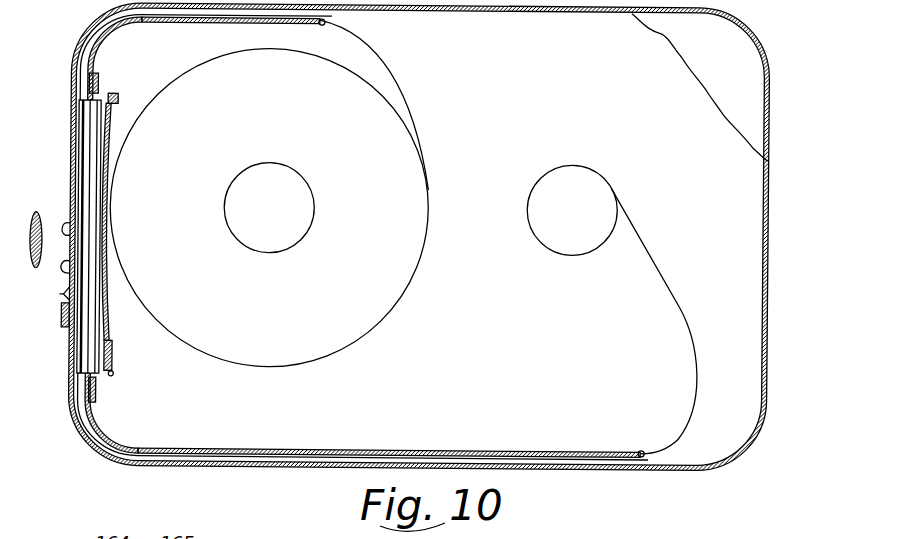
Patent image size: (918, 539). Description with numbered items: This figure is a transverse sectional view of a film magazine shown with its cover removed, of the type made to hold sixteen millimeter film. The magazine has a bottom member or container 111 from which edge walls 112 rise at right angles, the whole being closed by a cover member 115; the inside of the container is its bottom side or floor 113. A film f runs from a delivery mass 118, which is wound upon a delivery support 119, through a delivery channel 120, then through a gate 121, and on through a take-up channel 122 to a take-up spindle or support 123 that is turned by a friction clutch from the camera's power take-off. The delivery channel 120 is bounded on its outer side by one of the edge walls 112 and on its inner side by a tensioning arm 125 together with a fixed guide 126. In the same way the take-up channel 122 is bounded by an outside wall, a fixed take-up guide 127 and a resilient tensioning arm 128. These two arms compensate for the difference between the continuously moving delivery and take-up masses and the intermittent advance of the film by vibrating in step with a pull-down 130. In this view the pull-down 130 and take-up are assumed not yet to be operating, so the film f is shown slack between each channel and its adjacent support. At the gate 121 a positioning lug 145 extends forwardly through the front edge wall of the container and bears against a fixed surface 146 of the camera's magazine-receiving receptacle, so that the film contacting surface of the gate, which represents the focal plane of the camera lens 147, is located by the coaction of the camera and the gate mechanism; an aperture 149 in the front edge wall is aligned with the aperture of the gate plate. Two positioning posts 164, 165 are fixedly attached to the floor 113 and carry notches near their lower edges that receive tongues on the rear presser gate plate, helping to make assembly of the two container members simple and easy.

The bottom member or container 111 is at (752, 28).
The edge walls 112 is at (771, 169).
The bottom side or floor 113 is at (677, 193).
The cover member 115 is at (700, 87).
The delivery mass 118 is at (269, 207).
The delivery support 119 is at (269, 207).
The delivery channel 120 is at (90, 43).
The gate 121 is at (72, 155).
The take-up channel 122 is at (92, 468).
The take-up spindle or support 123 is at (572, 210).
The tensioning arm 125 is at (235, 27).
The fixed guide 126 is at (112, 35).
The fixed take-up guide 127 is at (117, 445).
The resilient tensioning arm 128 is at (391, 434).
The pull-down 130 is at (63, 308).
The positioning lug 145 is at (70, 278).
The fixed surface 146 is at (68, 305).
The lens 147 is at (52, 205).
The aperture 149 is at (69, 239).
The positioning post 164 is at (97, 82).
The positioning post 165 is at (96, 397).
The film f is at (380, 55).